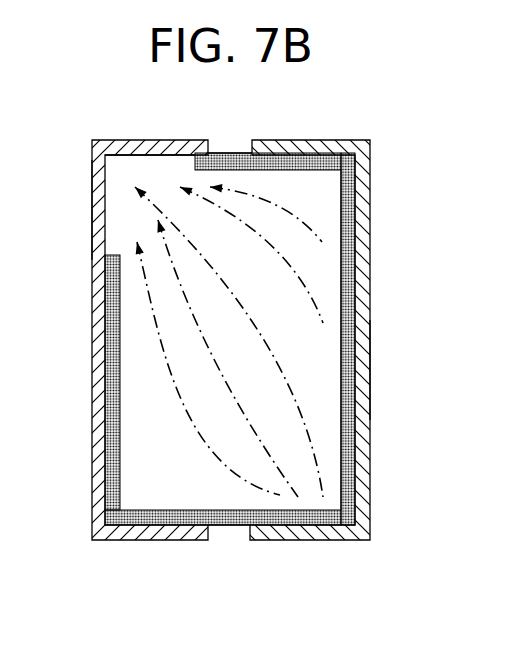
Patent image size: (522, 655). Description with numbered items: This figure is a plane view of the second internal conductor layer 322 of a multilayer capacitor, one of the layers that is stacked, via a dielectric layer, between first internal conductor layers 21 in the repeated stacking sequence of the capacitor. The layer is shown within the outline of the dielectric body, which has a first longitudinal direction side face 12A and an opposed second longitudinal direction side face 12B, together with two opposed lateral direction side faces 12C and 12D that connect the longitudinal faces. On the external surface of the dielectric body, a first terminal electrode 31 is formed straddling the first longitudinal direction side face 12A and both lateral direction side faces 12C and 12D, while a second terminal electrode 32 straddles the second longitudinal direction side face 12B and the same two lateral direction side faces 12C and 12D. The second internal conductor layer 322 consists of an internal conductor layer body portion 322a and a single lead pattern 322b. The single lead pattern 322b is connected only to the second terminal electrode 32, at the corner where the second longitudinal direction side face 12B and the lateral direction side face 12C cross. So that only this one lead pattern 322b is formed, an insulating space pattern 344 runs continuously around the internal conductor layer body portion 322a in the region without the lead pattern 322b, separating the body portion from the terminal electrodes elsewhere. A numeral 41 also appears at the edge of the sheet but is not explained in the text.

The second terminal electrode 32 is at (120, 148).
The first terminal electrode 31 is at (365, 247).
The second internal conductor layer 322 is at (312, 356).
The internal conductor layer body portion 322a is at (327, 418).
The single lead pattern 322b is at (163, 175).
The insulating space pattern 344 is at (345, 472).
The first longitudinal direction side face 12A is at (362, 370).
The second longitudinal direction side face 12B is at (100, 212).
The lateral direction side face 12C is at (225, 540).
The lateral direction side face 12D is at (228, 153).
The component (clipped label) 41 is at (0, 357).
The first internal conductor layer 21 is at (0, 138).